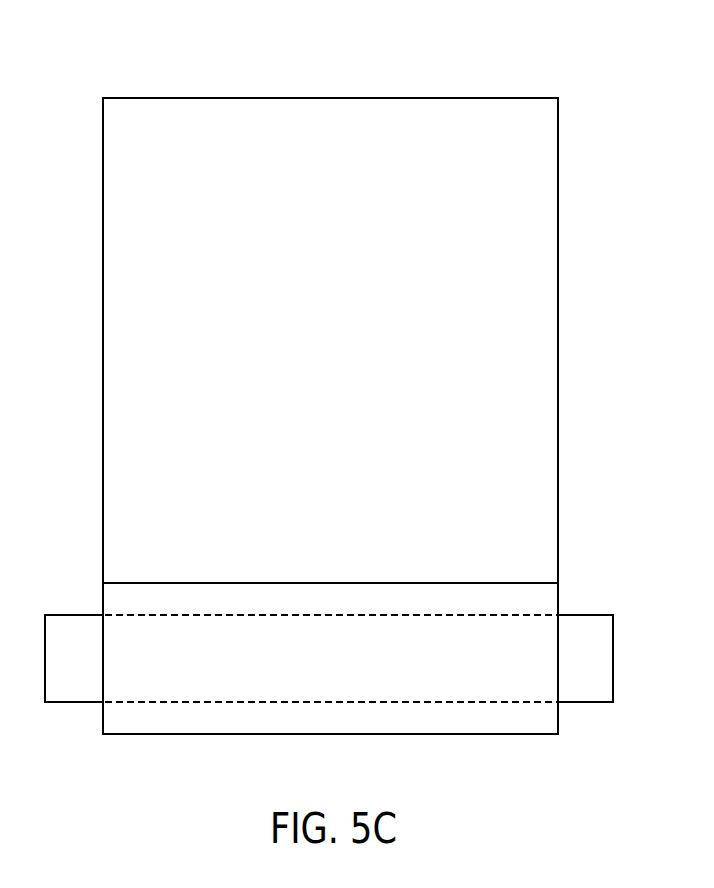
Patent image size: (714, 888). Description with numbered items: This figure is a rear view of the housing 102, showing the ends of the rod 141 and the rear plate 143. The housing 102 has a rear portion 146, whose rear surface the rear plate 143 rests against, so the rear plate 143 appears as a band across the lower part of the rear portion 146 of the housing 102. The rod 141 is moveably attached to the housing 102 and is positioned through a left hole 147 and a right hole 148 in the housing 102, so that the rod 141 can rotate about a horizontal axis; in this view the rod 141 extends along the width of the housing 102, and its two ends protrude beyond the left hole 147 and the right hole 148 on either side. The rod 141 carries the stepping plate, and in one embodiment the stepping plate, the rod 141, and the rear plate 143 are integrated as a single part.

The housing 102 is at (332, 98).
The rear portion 146 is at (527, 173).
The rear plate 143 is at (318, 583).
The rod 141 is at (585, 615).
The right hole 148 is at (103, 658).
The left hole 147 is at (558, 660).